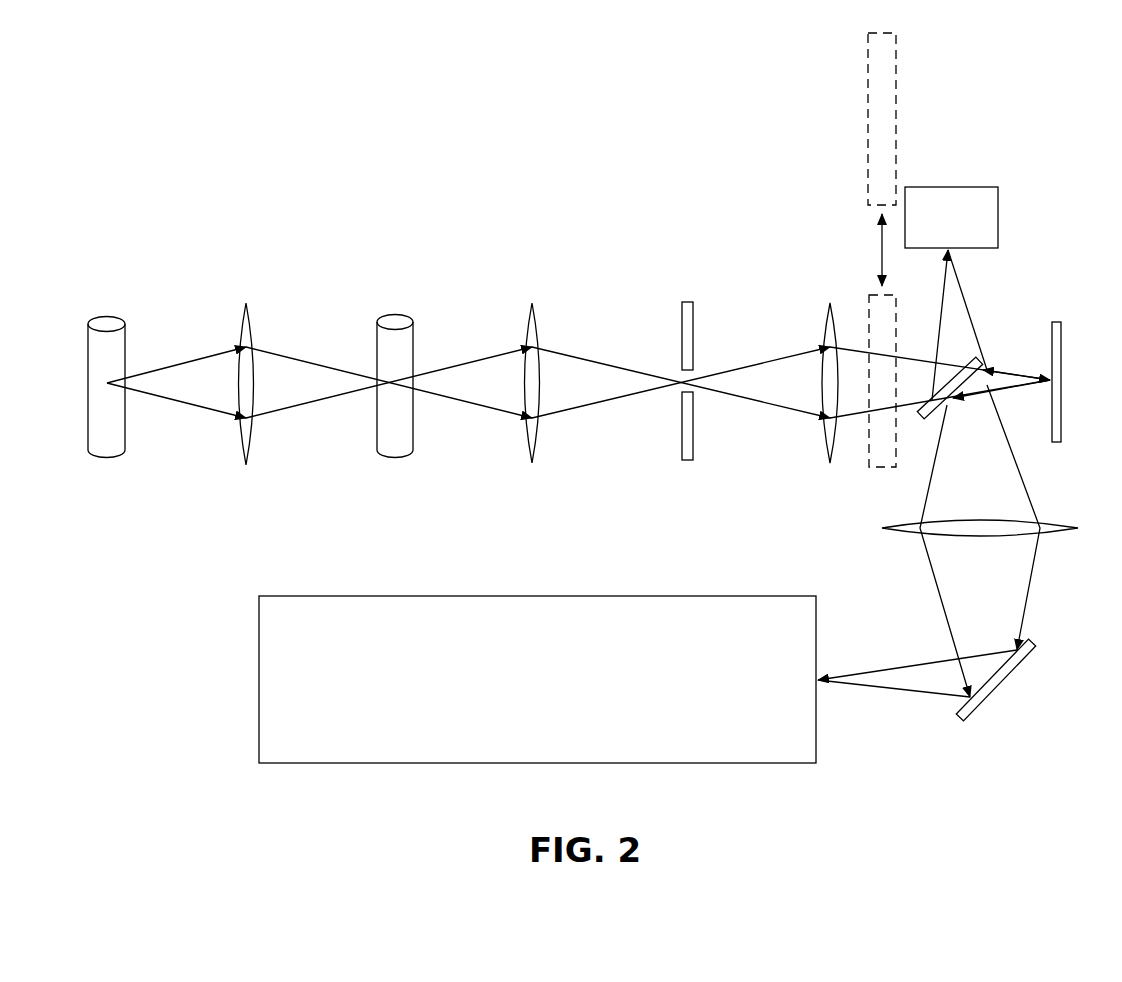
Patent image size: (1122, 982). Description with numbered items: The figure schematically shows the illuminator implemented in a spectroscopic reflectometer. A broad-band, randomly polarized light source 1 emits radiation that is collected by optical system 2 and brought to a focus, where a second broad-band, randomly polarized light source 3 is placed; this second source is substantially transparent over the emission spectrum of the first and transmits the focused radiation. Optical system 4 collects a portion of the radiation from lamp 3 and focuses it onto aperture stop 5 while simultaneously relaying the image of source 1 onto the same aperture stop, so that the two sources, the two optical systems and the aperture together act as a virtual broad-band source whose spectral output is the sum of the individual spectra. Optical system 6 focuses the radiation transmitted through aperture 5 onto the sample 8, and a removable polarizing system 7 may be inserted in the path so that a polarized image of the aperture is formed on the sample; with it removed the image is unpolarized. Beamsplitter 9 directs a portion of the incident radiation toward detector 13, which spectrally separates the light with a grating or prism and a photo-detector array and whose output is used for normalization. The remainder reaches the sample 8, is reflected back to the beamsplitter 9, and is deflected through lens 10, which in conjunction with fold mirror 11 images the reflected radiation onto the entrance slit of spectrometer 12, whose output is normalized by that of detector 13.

The light source 1 is at (108, 316).
The optical system 2 is at (250, 316).
The light source 3 is at (395, 314).
The optical system 4 is at (537, 314).
The aperture stop 5 is at (693, 314).
The optical system 6 is at (828, 316).
The polarizing system 7 is at (868, 95).
The sample 8 is at (1054, 320).
The beamsplitter 9 is at (976, 360).
The lens 10 is at (1076, 530).
The fold mirror 11 is at (1010, 672).
The spectrometer 12 is at (518, 731).
The detector 13 is at (935, 228).